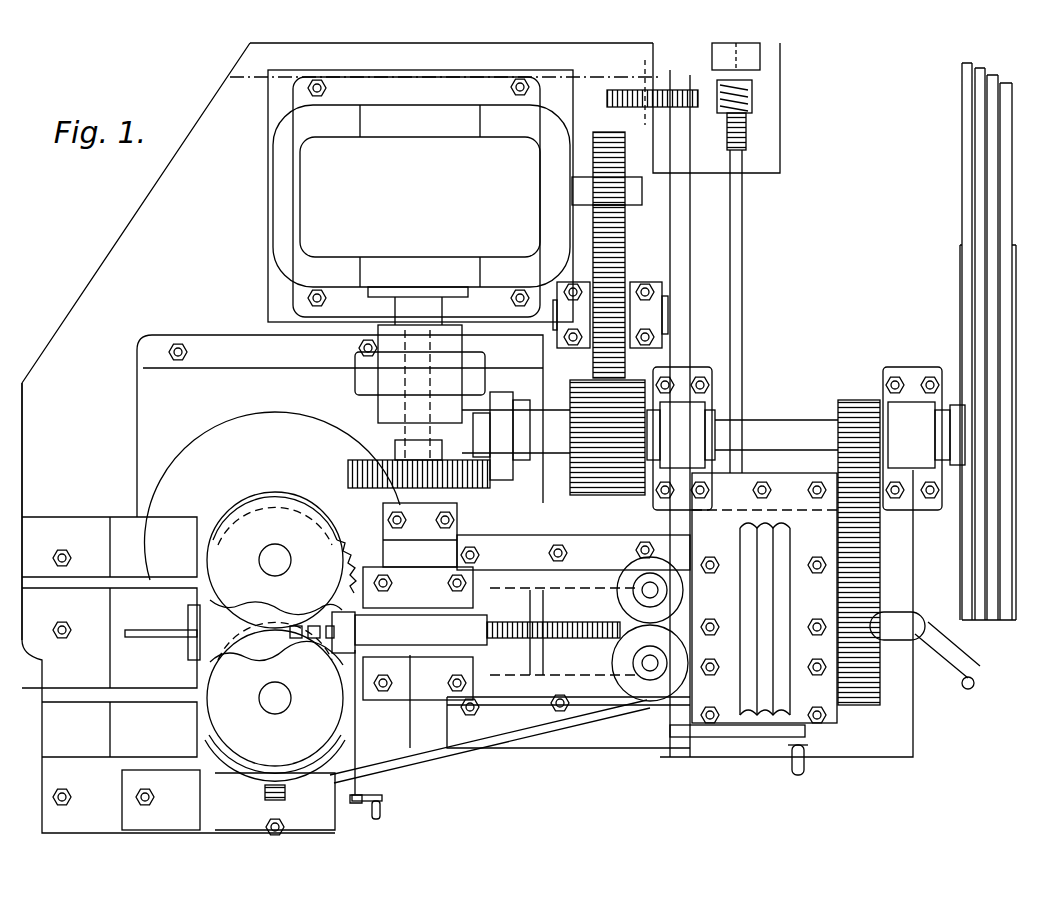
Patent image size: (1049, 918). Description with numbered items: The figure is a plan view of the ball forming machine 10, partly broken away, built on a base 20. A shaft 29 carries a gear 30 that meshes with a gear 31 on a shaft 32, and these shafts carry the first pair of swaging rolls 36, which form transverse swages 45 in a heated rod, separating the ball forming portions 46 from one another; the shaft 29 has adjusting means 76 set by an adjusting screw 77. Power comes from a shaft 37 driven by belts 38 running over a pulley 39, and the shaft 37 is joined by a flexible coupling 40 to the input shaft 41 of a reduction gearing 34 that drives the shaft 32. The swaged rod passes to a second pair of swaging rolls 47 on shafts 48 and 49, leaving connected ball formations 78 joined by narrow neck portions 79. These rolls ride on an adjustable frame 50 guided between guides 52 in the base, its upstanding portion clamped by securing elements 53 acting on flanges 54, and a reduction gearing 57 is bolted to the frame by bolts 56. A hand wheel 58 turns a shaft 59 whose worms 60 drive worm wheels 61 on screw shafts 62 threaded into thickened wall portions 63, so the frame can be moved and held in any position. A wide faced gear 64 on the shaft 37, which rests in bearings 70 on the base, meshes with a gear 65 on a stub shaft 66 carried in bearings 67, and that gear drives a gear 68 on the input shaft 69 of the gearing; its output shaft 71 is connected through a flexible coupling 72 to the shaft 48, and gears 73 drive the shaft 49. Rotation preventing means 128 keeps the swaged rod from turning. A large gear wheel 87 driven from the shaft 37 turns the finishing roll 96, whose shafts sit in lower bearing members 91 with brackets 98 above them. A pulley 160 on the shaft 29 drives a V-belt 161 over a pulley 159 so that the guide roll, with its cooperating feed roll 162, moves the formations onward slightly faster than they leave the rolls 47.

The machine 10 is at (36, 418).
The base 20 is at (692, 197).
The shaft 29 is at (240, 742).
The gear 30 is at (215, 700).
The gear 31 is at (328, 536).
The shaft 32 is at (280, 545).
The reduction gearing 34 is at (155, 417).
The swaging rolls 36 is at (250, 610).
The shaft 37 is at (778, 420).
The belts 38 is at (981, 206).
The pulley 39 is at (960, 282).
The flexible coupling 40 is at (515, 413).
The input shaft 41 is at (490, 400).
The swages 45 is at (330, 616).
The ball forming portions 46 is at (338, 616).
The swaging rolls 47 is at (470, 620).
The shaft 48 is at (405, 441).
The shaft 49 is at (440, 500).
The adjustable frame 50 is at (657, 228).
The guides 52 is at (252, 57).
The securing elements 53 is at (473, 546).
The flanges 54 is at (528, 536).
The bolts 56 is at (322, 82).
The reduction gearing 57 is at (325, 196).
The hand wheel 58 is at (797, 738).
The shaft 59 is at (745, 289).
The worms 60 is at (752, 90).
The worm wheels 61 is at (748, 130).
The screw shafts 62 is at (704, 98).
The thickened wall portions 63 is at (642, 119).
The wide faced gear 64 is at (640, 380).
The gear 65 is at (627, 276).
The stub shaft 66 is at (668, 313).
The bearings 67 is at (594, 282).
The gear 68 is at (625, 153).
The input shaft 69 is at (640, 186).
The bearings 70 is at (907, 372).
The output shaft 71 is at (415, 296).
The flexible coupling 72 is at (378, 392).
The gears 73 is at (375, 462).
The adjusting means 76 is at (215, 806).
The adjusting screw 77 is at (328, 830).
The ball formations 78 is at (540, 626).
The neck portions 79 is at (520, 632).
The gear wheel 87 is at (843, 400).
The lower bearing members 91 is at (770, 530).
The roll 96 is at (790, 712).
The brackets 98 is at (722, 650).
The rotation preventing means 128 is at (372, 612).
The pulley 159 is at (640, 654).
The pulley 160 is at (262, 783).
The V-belt 161 is at (449, 747).
The feed roll 162 is at (646, 566).